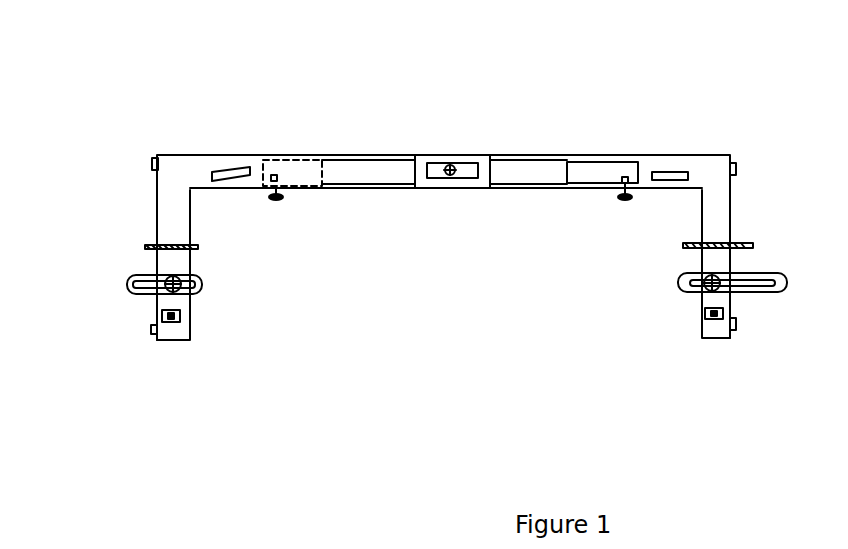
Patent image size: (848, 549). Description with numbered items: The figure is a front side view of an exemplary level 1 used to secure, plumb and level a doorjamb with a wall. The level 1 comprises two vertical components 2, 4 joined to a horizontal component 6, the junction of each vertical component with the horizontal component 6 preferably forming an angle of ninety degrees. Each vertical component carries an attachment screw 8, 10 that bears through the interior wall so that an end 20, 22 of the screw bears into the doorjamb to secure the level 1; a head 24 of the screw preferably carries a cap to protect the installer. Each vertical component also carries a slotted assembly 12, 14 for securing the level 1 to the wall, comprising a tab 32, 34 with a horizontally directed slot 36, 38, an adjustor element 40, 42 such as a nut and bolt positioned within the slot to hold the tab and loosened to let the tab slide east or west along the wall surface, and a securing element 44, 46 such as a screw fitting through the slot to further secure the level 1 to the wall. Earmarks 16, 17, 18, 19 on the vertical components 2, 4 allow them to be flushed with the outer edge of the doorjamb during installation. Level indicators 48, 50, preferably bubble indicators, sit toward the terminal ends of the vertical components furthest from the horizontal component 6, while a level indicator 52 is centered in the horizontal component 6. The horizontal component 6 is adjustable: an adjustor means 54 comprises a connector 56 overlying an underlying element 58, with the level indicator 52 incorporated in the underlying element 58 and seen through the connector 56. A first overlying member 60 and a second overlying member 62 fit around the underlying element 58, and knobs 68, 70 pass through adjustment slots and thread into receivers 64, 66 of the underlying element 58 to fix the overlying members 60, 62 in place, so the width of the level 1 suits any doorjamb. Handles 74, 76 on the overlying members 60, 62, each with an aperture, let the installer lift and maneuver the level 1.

The level 1 is at (683, 58).
The vertical component 2 is at (160, 217).
The vertical component 4 is at (722, 211).
The horizontal component 6 is at (690, 157).
The attachment screw 8 is at (143, 247).
The attachment screw 10 is at (746, 246).
The slotted assembly 12 is at (120, 301).
The slotted assembly 14 is at (784, 296).
The earmark 16 is at (150, 163).
The earmark 17 is at (152, 333).
The earmark 18 is at (737, 168).
The earmark 19 is at (737, 326).
The end of attachment screw 20 is at (145, 247).
The end of attachment screw 22 is at (742, 246).
The head of attachment screw 24 is at (198, 247).
The tab 32 is at (203, 287).
The tab 34 is at (787, 282).
The slot 36 is at (135, 278).
The slot 38 is at (750, 282).
The adjustor element 40 is at (180, 278).
The adjustor element 42 is at (705, 290).
The securing element 44 is at (128, 284).
The securing element 46 is at (766, 290).
The level indicator 48 is at (178, 322).
The level indicator 50 is at (710, 319).
The level indicator 52 is at (450, 176).
The adjustor means 54 is at (512, 151).
The connector 56 is at (458, 160).
The underlying element 58 is at (362, 160).
The first overlying member 60 is at (215, 165).
The second overlying member 62 is at (656, 170).
The receiver 64 is at (280, 182).
The receiver 66 is at (622, 181).
The knob 68 is at (276, 200).
The knob 70 is at (625, 200).
The handle 74 is at (246, 170).
The handle 76 is at (690, 172).